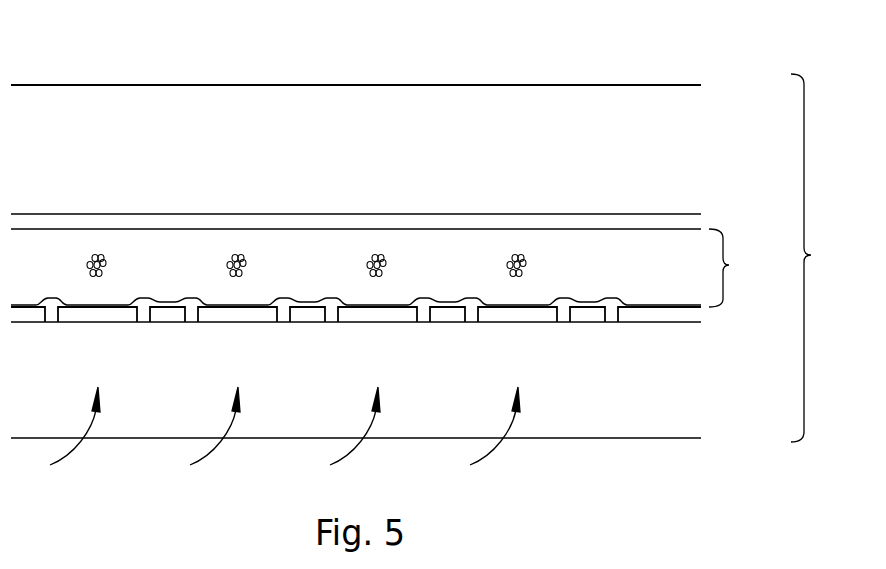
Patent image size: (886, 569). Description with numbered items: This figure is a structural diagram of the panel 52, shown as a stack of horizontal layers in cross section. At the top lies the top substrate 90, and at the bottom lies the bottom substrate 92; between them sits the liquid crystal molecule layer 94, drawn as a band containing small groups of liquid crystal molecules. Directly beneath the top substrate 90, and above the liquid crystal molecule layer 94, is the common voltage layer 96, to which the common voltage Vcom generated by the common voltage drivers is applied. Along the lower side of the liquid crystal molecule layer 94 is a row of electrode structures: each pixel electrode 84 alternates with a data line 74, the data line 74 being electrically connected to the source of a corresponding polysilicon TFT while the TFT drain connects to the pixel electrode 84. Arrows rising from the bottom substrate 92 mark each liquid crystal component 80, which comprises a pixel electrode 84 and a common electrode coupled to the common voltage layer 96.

The panel 52 is at (812, 255).
The top substrate 90 is at (46, 97).
The common voltage layer 96 is at (549, 222).
The liquid crystal molecule layer 94 is at (730, 265).
The pixel electrode 84 is at (93, 318).
The data line 74 is at (170, 315).
The liquid crystal component 80 is at (271, 440).
The bottom substrate 92 is at (128, 420).